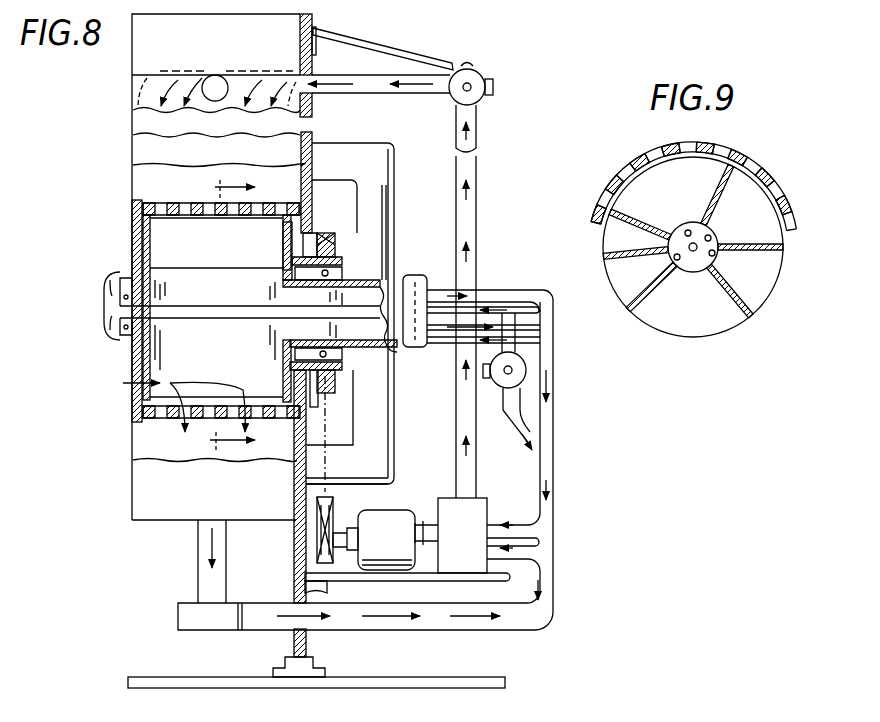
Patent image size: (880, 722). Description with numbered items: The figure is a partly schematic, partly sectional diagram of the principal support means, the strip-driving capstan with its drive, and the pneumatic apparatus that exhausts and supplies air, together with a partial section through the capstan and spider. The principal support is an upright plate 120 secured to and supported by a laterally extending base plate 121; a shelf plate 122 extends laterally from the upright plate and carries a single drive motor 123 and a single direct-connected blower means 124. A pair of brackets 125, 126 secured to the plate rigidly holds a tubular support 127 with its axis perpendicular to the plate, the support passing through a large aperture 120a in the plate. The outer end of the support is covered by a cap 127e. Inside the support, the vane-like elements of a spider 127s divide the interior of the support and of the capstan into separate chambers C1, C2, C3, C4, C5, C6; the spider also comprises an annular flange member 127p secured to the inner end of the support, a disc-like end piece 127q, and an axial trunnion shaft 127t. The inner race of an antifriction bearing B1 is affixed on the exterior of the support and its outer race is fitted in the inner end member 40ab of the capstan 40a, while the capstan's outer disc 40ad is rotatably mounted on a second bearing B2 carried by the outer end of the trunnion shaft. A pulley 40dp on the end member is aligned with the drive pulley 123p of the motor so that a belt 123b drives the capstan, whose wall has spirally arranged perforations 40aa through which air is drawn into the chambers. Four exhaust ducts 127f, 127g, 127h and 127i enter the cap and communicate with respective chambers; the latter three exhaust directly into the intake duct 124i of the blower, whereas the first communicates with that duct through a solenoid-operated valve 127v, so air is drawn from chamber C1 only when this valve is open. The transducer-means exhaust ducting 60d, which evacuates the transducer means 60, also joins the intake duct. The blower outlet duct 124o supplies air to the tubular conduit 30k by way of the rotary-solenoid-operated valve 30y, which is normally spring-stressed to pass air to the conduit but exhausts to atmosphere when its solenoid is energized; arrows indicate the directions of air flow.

In FIG. 8, the transducer means 60 is at (190, 527).
In FIG. 8, the transducer-means exhaust ducting 60d is at (232, 570).
In FIG. 8, the tubular conduit 30k is at (375, 80).
In FIG. 8, the rotary-solenoid-operated valve 30y is at (472, 76).
In FIG. 8, the capstan 40a is at (185, 325).
In FIG. 9, the capstan 40a is at (688, 179).
In FIG. 8, the perforations 40aa is at (155, 420).
In FIG. 9, the perforations 40aa is at (662, 148).
In FIG. 8, the inner end member 40ab is at (300, 222).
In FIG. 8, the disc 40ad is at (132, 358).
In FIG. 8, the pulley 40dp is at (337, 248).
In FIG. 8, the tubular support 127 is at (281, 308).
In FIG. 8, the disc-like end piece 127q is at (155, 233).
In FIG. 8, the annular flange member 127p is at (283, 243).
In FIG. 9, the annular flange member 127p is at (628, 302).
In FIG. 8, the spider 127s is at (182, 270).
In FIG. 9, the spider 127s is at (730, 188).
In FIG. 8, the trunnion shaft 127t is at (180, 306).
In FIG. 9, the trunnion shaft 127t is at (687, 240).
In FIG. 8, the cap 127e is at (408, 258).
In FIG. 8, the exhaust duct 127i is at (487, 292).
In FIG. 9, the exhaust duct 127i is at (700, 238).
In FIG. 8, the exhaust duct 127f is at (540, 310).
In FIG. 9, the exhaust duct 127f is at (712, 238).
In FIG. 8, the exhaust duct 127g is at (530, 330).
In FIG. 9, the exhaust duct 127g is at (715, 254).
In FIG. 8, the exhaust duct 127h is at (522, 340).
In FIG. 9, the exhaust duct 127h is at (680, 258).
In FIG. 8, the solenoid-operated valve 127v is at (512, 372).
In FIG. 8, the duct 124o is at (458, 399).
In FIG. 8, the intake duct 124i is at (553, 497).
In FIG. 8, the blower means 124 is at (476, 528).
In FIG. 8, the drive motor 123 is at (402, 542).
In FIG. 8, the drive pulley 123p is at (316, 520).
In FIG. 8, the belt 123b is at (318, 553).
In FIG. 8, the shelf plate 122 is at (440, 576).
In FIG. 8, the upright plate 120 is at (308, 640).
In FIG. 8, the aperture 120a is at (305, 378).
In FIG. 8, the base plate 121 is at (372, 678).
In FIG. 8, the bracket 125 is at (328, 145).
In FIG. 8, the bracket 126 is at (388, 484).
In FIG. 8, the antifriction bearing B1 is at (342, 353).
In FIG. 8, the bearing B2 is at (122, 275).
In FIG. 9, the chamber C1 is at (746, 207).
In FIG. 9, the chamber C2 is at (746, 281).
In FIG. 9, the chamber C3 is at (689, 307).
In FIG. 9, the chamber C4 is at (629, 284).
In FIG. 9, the chamber C5 is at (622, 237).
In FIG. 9, the chamber C6 is at (681, 181).